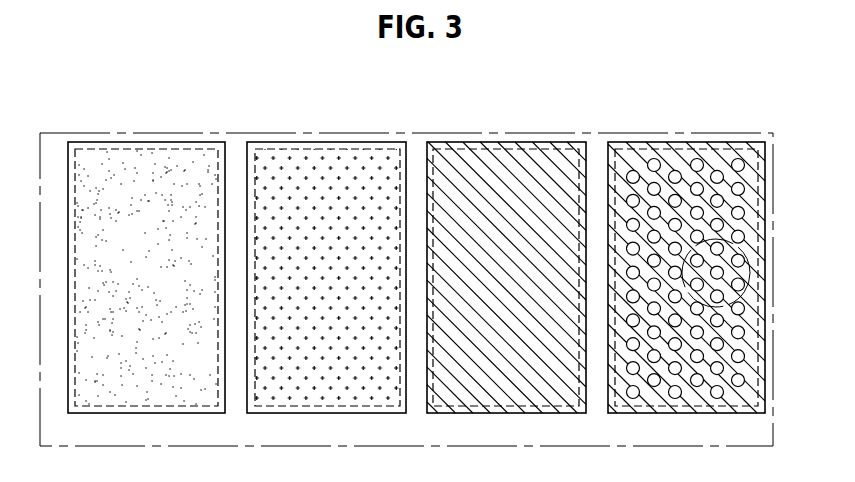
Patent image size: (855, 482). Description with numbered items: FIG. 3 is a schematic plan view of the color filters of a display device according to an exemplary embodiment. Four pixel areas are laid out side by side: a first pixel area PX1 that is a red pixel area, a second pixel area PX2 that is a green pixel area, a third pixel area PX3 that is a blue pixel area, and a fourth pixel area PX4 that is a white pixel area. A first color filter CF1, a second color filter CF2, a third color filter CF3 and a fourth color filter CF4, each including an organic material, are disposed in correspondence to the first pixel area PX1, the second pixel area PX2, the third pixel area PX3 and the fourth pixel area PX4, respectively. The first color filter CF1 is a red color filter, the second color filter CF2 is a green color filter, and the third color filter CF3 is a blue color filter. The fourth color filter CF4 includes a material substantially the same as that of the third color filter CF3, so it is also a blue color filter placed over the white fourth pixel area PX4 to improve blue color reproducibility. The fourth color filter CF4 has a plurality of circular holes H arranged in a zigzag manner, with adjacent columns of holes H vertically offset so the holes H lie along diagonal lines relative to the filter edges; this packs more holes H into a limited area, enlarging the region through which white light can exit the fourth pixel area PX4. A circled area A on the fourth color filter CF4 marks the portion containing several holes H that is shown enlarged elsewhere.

The first pixel area PX1 is at (138, 150).
The second pixel area PX2 is at (319, 150).
The third pixel area PX3 is at (498, 150).
The fourth pixel area PX4 is at (680, 150).
The first color filter CF1 is at (189, 142).
The second color filter CF2 is at (375, 142).
The third color filter CF3 is at (550, 142).
The fourth color filter CF4 is at (730, 142).
The hole H is at (744, 165).
The area A is at (746, 252).